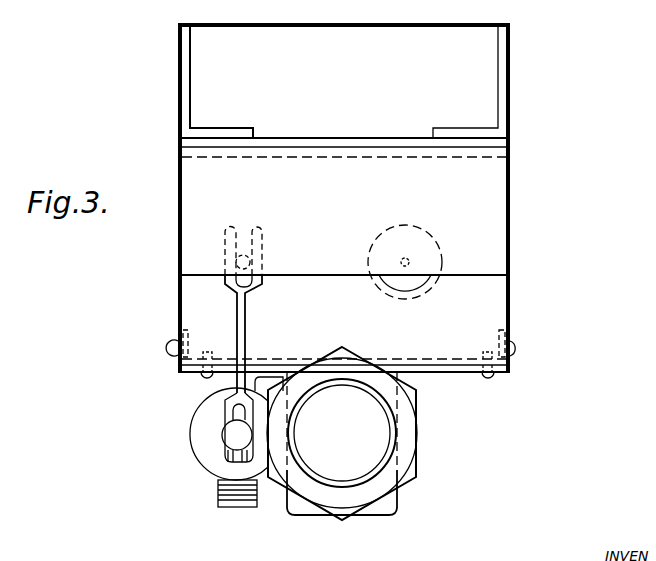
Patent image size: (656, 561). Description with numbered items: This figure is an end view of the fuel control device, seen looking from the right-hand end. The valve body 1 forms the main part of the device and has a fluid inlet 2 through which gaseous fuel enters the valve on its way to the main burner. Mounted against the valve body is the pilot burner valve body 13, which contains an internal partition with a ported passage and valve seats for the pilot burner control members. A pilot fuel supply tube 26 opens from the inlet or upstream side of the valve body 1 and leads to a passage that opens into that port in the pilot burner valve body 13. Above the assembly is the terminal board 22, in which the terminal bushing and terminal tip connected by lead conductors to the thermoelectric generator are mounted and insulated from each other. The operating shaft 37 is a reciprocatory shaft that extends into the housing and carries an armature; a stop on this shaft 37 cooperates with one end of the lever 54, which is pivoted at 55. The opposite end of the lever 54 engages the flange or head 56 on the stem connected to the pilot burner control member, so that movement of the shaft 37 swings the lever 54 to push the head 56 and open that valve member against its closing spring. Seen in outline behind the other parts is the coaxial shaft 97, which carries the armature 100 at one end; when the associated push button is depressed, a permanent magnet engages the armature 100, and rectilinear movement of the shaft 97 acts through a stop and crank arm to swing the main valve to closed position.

The valve body 1 is at (385, 502).
The fluid inlet 2 is at (403, 434).
The pilot burner valve body 13 is at (198, 437).
The terminal board 22 is at (498, 144).
The pilot fuel supply tube 26 is at (267, 378).
The operating shaft 37 is at (251, 262).
The lever 54 is at (236, 392).
The pivot 55 is at (238, 318).
The flange or head 56 is at (230, 440).
The coaxial shaft 97 is at (410, 262).
The armature 100 is at (422, 242).